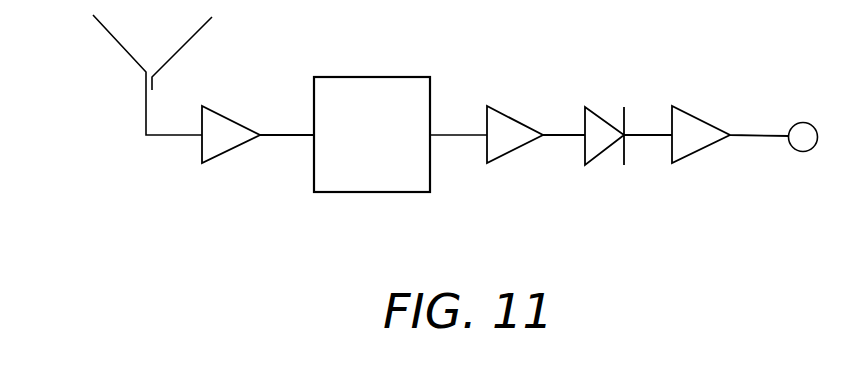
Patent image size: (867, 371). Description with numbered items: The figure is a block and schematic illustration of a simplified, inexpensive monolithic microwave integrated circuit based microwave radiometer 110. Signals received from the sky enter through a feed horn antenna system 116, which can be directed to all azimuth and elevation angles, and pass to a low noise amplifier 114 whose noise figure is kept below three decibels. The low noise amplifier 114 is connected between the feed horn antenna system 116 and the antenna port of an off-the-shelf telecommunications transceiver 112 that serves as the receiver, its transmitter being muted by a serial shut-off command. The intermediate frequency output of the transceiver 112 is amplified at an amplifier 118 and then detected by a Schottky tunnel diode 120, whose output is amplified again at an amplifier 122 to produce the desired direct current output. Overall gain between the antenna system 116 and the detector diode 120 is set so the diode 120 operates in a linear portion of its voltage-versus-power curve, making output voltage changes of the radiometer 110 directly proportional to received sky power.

The microwave radiometer 110 is at (456, 88).
The telecommunications transceiver 112 is at (398, 150).
The low noise amplifier 114 is at (213, 163).
The feed horn antenna system 116 is at (185, 42).
The amplifier 118 is at (513, 150).
The Schottky tunnel diode 120 is at (607, 115).
The amplifier 122 is at (695, 115).